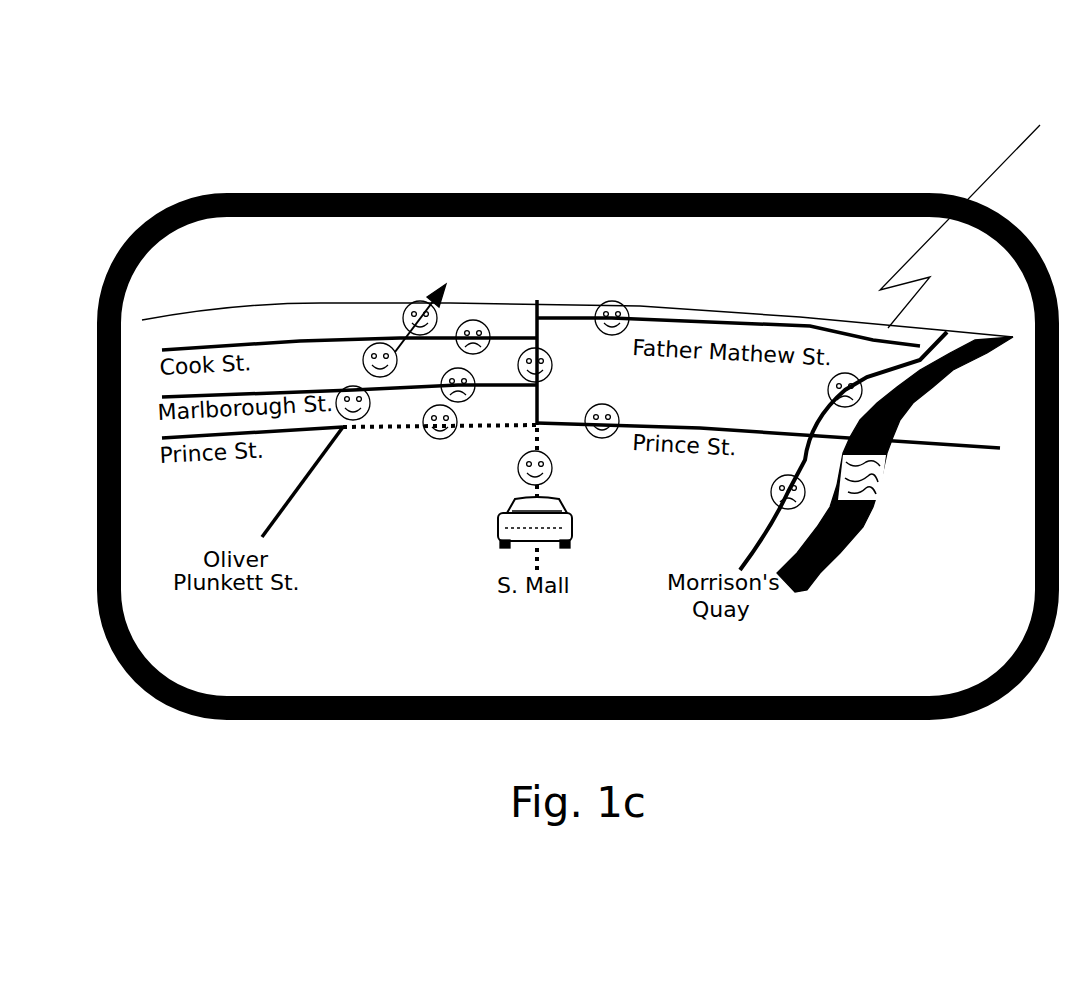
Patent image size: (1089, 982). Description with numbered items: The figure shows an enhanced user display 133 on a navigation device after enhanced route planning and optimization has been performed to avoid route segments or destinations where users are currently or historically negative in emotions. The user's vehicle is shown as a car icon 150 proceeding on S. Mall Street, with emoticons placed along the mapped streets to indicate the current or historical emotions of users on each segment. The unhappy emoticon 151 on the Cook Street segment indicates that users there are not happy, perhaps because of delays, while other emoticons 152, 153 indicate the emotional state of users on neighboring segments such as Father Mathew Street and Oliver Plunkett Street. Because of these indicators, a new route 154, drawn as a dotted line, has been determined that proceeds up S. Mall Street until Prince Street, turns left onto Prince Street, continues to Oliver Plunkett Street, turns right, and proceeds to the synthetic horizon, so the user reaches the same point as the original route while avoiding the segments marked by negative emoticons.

The user display 133 is at (908, 674).
The vehicle icon 150 is at (490, 547).
The unhappy emotion indicator 151 is at (484, 321).
The mood indicator 152 is at (618, 302).
The happy mood indicator 153 is at (368, 346).
The new route 154 is at (410, 427).